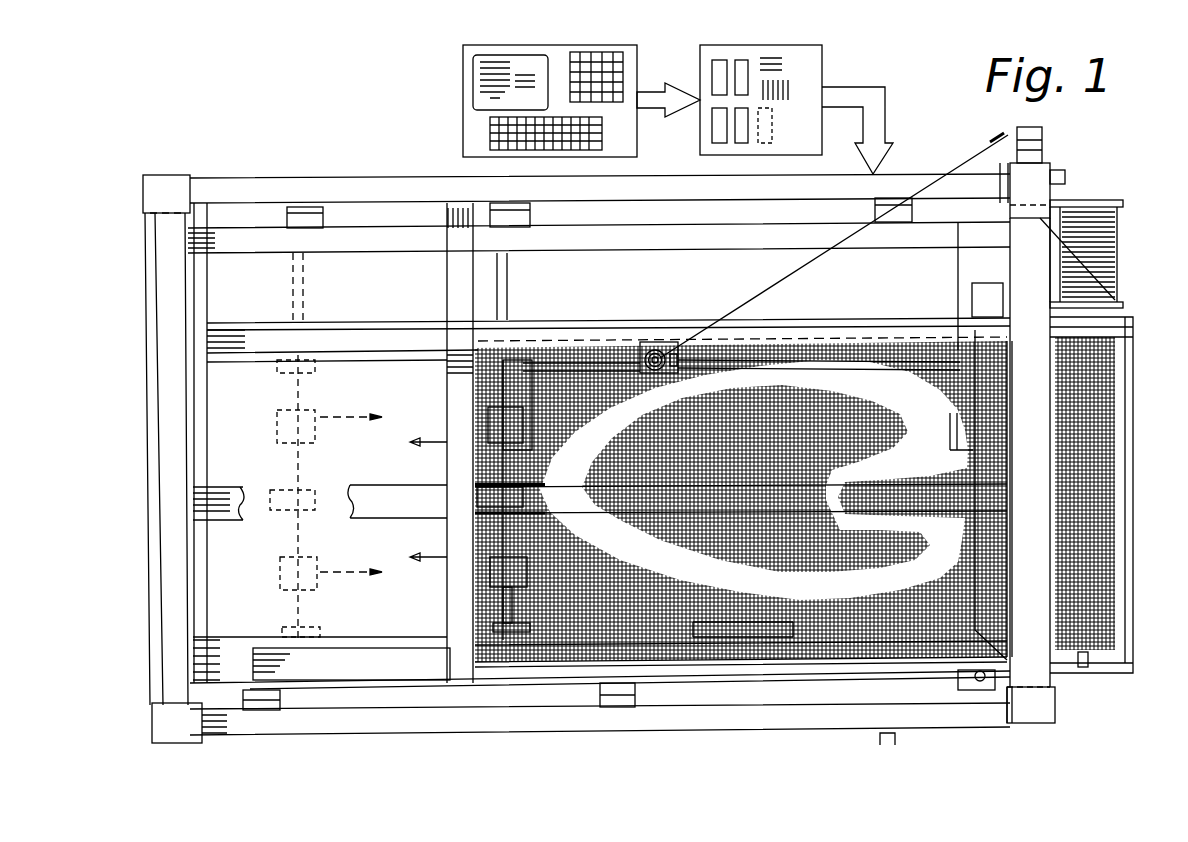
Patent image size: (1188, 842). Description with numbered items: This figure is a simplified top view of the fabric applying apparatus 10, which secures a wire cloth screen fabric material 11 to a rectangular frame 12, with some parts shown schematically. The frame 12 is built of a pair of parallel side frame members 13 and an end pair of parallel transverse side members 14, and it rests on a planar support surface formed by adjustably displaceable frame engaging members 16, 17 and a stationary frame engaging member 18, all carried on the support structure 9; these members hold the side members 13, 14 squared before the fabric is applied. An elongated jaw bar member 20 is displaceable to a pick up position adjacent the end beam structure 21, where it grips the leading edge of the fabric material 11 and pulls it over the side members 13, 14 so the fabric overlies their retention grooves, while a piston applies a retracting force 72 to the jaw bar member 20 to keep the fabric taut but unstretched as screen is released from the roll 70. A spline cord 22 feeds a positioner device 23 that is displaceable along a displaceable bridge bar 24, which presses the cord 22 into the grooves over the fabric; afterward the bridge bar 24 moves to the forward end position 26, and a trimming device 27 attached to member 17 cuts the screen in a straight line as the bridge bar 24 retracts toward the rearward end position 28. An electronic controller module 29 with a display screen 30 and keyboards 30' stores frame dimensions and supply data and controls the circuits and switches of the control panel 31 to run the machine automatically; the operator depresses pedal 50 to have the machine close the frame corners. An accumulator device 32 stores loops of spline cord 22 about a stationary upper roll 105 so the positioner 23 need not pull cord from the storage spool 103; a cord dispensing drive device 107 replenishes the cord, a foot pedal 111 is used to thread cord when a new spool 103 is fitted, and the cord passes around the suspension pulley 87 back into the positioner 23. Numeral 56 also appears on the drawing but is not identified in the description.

The support structure 9 is at (178, 232).
The fabric applying apparatus 10 is at (250, 110).
The fabric material 11 is at (510, 345).
The rectangular frame 12 is at (530, 370).
The side frame members 13 is at (793, 364).
The transverse side members 14 is at (950, 437).
The adjustably displaceable frame engaging member 16 is at (310, 463).
The adjustably displaceable frame engaging member 17 is at (825, 320).
The stationary frame engaging member 18 is at (972, 520).
The elongated jaw bar member 20 is at (447, 410).
The end beam structure 21 is at (1045, 701).
The spline cord 22 is at (845, 232).
The positioner device 23 is at (648, 342).
The displaceable bridge bar 24 is at (770, 320).
The forward end position 26 is at (697, 697).
The trimming device 27 is at (980, 688).
The rearward end position 28 is at (693, 184).
The electronic controller module 29 is at (637, 48).
The display screen 30 is at (471, 82).
The keyboards 30' is at (584, 102).
The control panel 31 is at (822, 50).
The accumulator device 32 is at (1060, 137).
The pedal 50 is at (878, 738).
The cross member 56 is at (887, 350).
The roll of material 70 is at (1103, 598).
The retracting force 72 is at (425, 556).
The suspension pulley 87 is at (758, 276).
The storage spool 103 is at (1112, 297).
The stationary upper roll 105 is at (1037, 128).
The cord dispensing drive device 107 is at (1046, 196).
The foot pedal 111 is at (1060, 172).